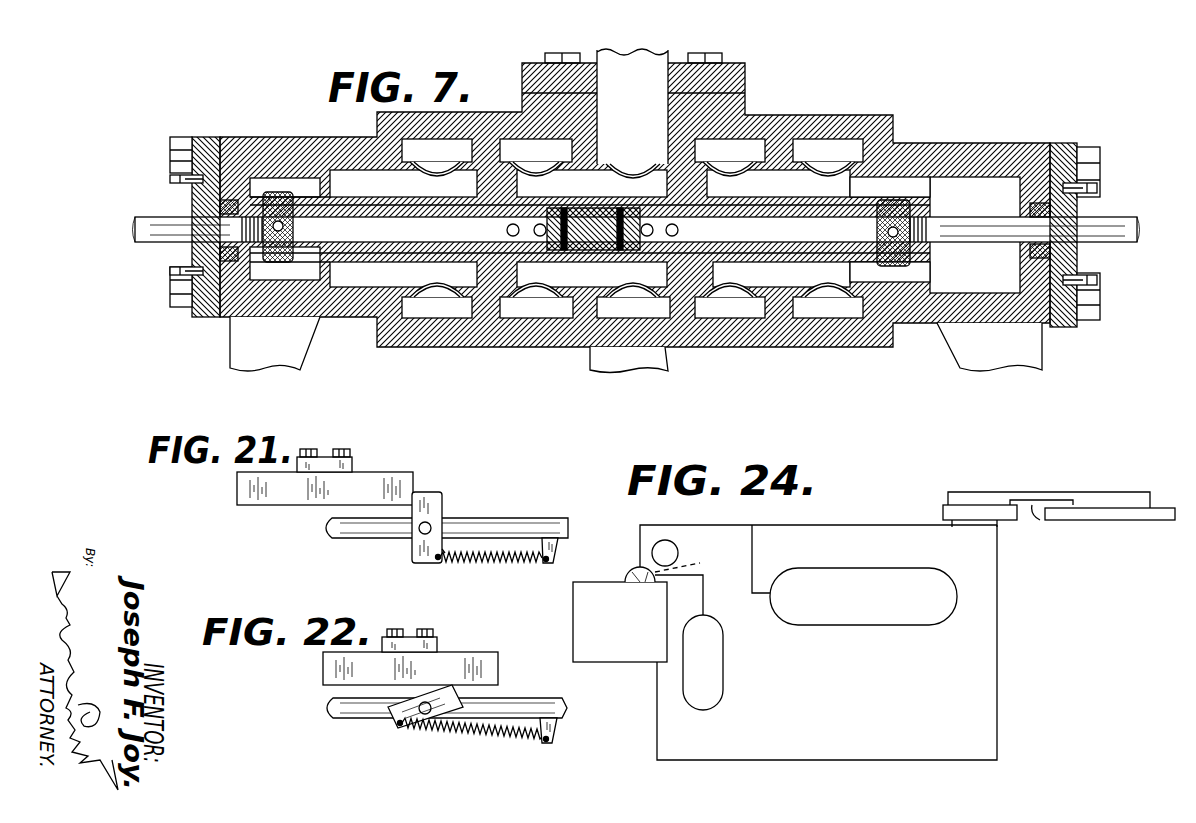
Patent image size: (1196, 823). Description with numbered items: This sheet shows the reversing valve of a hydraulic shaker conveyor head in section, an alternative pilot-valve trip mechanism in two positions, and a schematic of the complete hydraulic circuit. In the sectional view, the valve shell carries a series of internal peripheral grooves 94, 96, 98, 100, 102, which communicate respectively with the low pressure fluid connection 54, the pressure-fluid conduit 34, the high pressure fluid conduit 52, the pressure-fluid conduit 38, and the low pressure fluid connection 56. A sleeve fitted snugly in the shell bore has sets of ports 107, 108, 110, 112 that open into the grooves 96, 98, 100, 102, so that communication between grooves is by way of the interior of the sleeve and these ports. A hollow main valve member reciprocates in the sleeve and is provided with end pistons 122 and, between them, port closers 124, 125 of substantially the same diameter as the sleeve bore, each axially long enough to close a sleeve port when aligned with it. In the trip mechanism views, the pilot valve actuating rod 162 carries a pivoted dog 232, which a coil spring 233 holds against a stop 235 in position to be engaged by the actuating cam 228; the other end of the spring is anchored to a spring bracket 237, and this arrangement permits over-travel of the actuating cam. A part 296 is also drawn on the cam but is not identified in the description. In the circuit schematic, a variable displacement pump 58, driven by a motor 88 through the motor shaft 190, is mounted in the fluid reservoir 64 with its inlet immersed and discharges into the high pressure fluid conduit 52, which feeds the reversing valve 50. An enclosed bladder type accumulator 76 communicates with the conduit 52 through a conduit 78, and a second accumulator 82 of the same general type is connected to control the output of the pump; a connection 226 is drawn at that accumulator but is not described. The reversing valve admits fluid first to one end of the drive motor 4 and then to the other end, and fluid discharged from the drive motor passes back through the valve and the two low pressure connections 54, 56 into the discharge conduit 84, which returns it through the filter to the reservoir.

In FIG. 7, the high pressure fluid conduit 52 is at (642, 68).
In FIG. 24, the high pressure fluid conduit 52 is at (815, 525).
In FIG. 7, the internal peripheral groove 94 is at (440, 310).
In FIG. 7, the internal peripheral groove 96 is at (553, 310).
In FIG. 7, the internal peripheral groove 98 is at (660, 310).
In FIG. 7, the internal peripheral groove 100 is at (748, 310).
In FIG. 7, the internal peripheral groove 102 is at (828, 310).
In FIG. 7, the sleeve ports 107 is at (547, 168).
In FIG. 7, the sleeve ports 108 is at (637, 175).
In FIG. 7, the sleeve ports 110 is at (742, 170).
In FIG. 7, the sleeve ports 112 is at (826, 172).
In FIG. 7, the end pistons 122 is at (880, 292).
In FIG. 7, the port closer 124 is at (490, 190).
In FIG. 7, the port closer 125 is at (698, 183).
In FIG. 21, the block 296 is at (350, 462).
In FIG. 22, the block 296 is at (411, 640).
In FIG. 21, the actuating cam 228 is at (397, 483).
In FIG. 22, the actuating cam 228 is at (455, 660).
In FIG. 21, the pivoted dog 232 is at (432, 500).
In FIG. 22, the pivoted dog 232 is at (460, 692).
In FIG. 21, the stop 235 is at (447, 552).
In FIG. 22, the stop 235 is at (449, 727).
In FIG. 21, the actuating rod 162 is at (540, 530).
In FIG. 22, the actuating rod 162 is at (560, 710).
In FIG. 21, the coil spring 233 is at (480, 562).
In FIG. 22, the coil spring 233 is at (497, 739).
In FIG. 21, the spring bracket 237 is at (546, 562).
In FIG. 22, the spring bracket 237 is at (550, 741).
In FIG. 24, the variable displacement pump 58 is at (639, 568).
In FIG. 24, the motor 88 is at (678, 553).
In FIG. 24, the motor shaft 190 is at (693, 563).
In FIG. 24, the conduit 78 is at (754, 557).
In FIG. 24, the accumulator 76 is at (858, 625).
In FIG. 24, the second accumulator 82 is at (723, 680).
In FIG. 24, the conduit 226 is at (704, 594).
In FIG. 24, the fluid reservoir 64 is at (634, 650).
In FIG. 24, the discharge conduit 84 is at (997, 688).
In FIG. 24, the pressure-fluid conduit 38 is at (1013, 492).
In FIG. 24, the low pressure fluid connection 56 is at (958, 527).
In FIG. 24, the reversing valve 50 is at (980, 520).
In FIG. 24, the low pressure fluid connection 54 is at (1000, 525).
In FIG. 24, the pressure-fluid conduit 34 is at (1043, 522).
In FIG. 24, the hydraulic fluid-operated motor 4 is at (1110, 520).